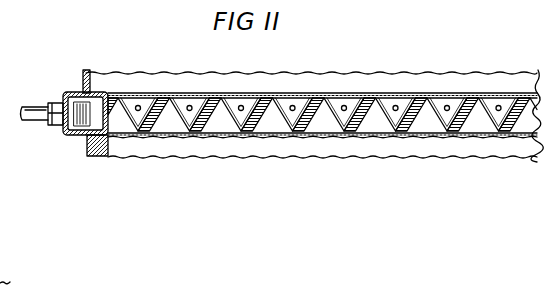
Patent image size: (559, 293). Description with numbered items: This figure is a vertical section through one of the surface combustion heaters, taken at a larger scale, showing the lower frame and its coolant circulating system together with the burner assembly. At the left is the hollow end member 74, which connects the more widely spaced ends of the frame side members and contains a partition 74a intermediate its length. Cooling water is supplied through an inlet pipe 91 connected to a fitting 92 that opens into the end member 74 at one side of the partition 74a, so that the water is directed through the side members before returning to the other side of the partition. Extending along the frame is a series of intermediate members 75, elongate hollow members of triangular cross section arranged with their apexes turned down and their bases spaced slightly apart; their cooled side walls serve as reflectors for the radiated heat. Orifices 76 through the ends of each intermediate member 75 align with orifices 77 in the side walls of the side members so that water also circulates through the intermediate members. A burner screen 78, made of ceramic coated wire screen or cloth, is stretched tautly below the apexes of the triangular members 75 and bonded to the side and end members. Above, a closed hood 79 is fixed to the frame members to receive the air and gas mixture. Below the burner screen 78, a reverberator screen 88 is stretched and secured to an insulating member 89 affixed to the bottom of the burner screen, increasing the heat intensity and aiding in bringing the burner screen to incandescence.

The hollow end member 74 is at (63, 94).
The partition 74a is at (80, 128).
The intermediate member 75 is at (232, 96).
The orifices 76 is at (139, 105).
The orifices 77 is at (0, 249).
The burner screen 78 is at (188, 139).
The closed hood 79 is at (83, 79).
The reverberator screen 88 is at (255, 155).
The insulating member 89 is at (92, 157).
The inlet pipe 91 is at (33, 112).
The fitting 92 is at (59, 122).